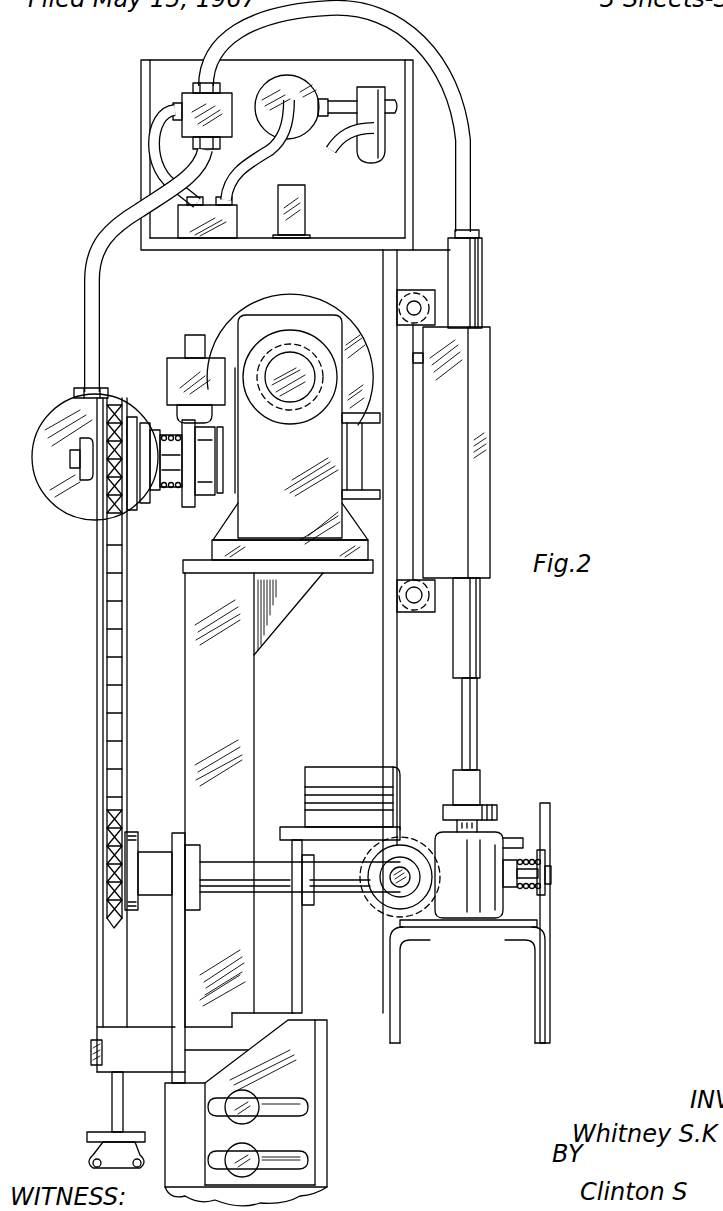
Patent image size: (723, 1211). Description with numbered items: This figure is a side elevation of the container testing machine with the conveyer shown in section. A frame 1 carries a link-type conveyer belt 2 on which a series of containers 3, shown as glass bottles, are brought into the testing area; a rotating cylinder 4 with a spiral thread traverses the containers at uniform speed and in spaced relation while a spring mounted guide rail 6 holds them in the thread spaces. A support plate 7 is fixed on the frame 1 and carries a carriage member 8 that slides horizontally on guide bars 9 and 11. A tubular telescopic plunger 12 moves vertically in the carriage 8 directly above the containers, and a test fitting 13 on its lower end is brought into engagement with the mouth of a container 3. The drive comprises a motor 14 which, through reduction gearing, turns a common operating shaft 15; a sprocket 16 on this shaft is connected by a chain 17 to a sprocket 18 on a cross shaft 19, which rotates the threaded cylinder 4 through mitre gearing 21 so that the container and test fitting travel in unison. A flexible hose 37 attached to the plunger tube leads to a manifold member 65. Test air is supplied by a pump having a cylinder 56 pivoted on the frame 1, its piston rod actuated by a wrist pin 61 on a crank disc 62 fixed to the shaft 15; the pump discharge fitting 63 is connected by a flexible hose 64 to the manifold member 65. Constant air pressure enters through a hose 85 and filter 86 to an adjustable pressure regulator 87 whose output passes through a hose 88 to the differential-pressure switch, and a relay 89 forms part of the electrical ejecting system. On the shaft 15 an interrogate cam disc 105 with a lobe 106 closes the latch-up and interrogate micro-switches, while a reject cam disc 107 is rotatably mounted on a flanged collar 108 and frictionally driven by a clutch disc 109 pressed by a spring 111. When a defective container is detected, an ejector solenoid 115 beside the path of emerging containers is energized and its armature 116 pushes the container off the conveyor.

The frame 1 is at (395, 1040).
The link-type conveyer belt 2 is at (488, 927).
The container 3 is at (490, 838).
The rotating cylinder 4 is at (380, 900).
The spring mounted guide rail 6 is at (520, 890).
The support plate 7 is at (382, 648).
The carriage member 8 is at (478, 418).
The guide bar 9 is at (418, 612).
The guide bar 11 is at (412, 302).
The tubular telescopic plunger 12 is at (478, 655).
The test fitting 13 is at (472, 800).
The motor 14 is at (280, 305).
The common operating shaft 15 is at (170, 458).
The sprocket 16 is at (116, 420).
The chain 17 is at (112, 654).
The sprocket 18 is at (118, 890).
The cross shaft 19 is at (238, 892).
The mitre gearing 21 is at (365, 895).
The flexible hose 37 is at (456, 98).
The pump cylinder 56 is at (88, 495).
The wrist pin 61 is at (83, 480).
The crank disc 62 is at (96, 470).
The discharge fitting 63 is at (76, 392).
The flexible hose 64 is at (83, 300).
The manifold member 65 is at (176, 108).
The hose 85 is at (372, 163).
The filter 86 is at (378, 124).
The adjustable pressure regulator 87 is at (265, 98).
The hose 88 is at (158, 152).
The relay 89 is at (300, 208).
The interrogate cam disc 105 is at (163, 380).
The lobe 106 is at (152, 420).
The reject cam disc 107 is at (195, 505).
The flanged collar 108 is at (205, 487).
The clutch disc 109 is at (178, 505).
The spring 111 is at (164, 495).
The ejector solenoid 115 is at (315, 788).
The armature 116 is at (398, 820).